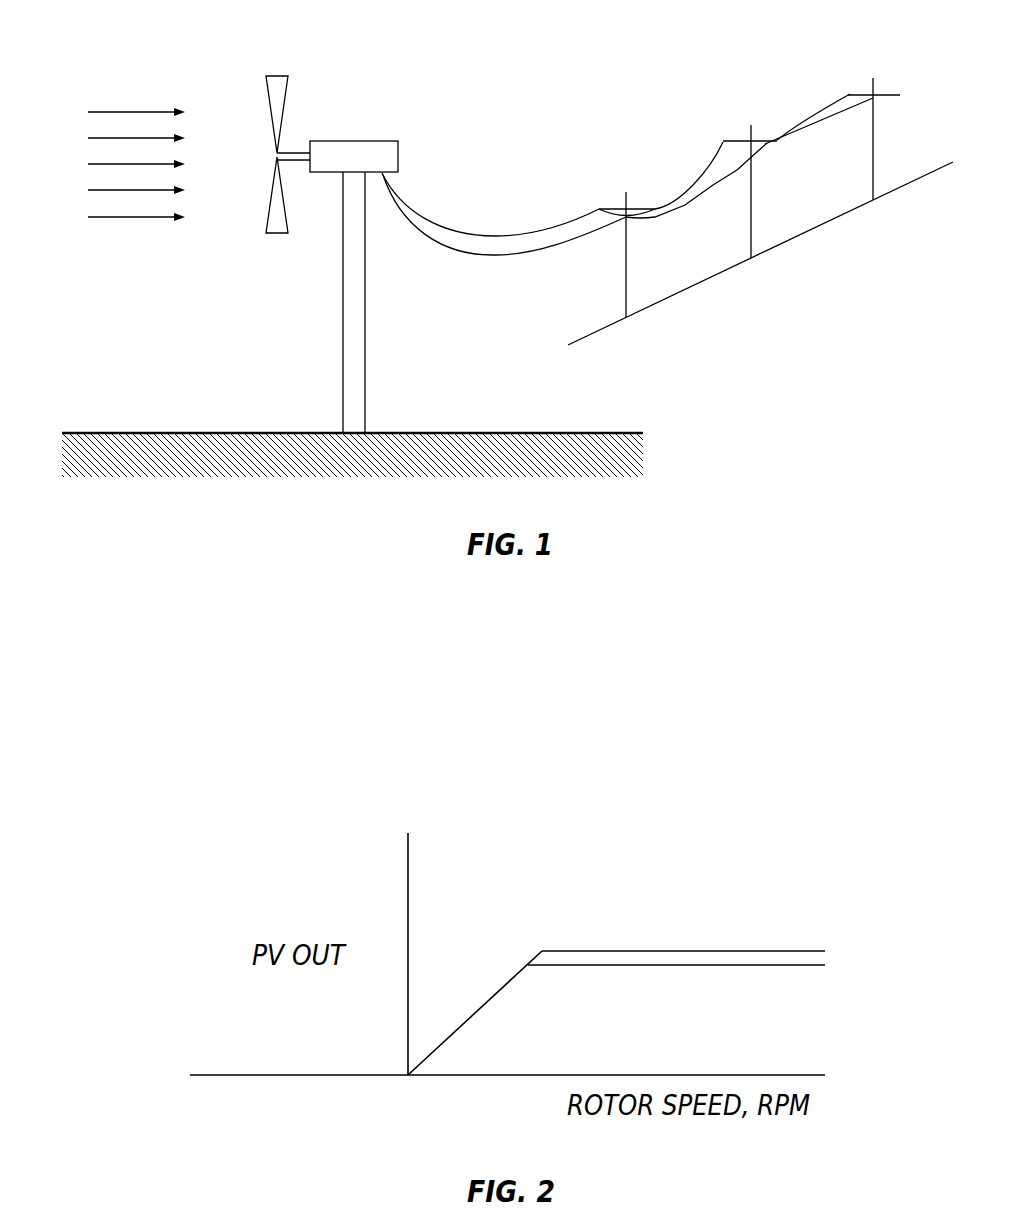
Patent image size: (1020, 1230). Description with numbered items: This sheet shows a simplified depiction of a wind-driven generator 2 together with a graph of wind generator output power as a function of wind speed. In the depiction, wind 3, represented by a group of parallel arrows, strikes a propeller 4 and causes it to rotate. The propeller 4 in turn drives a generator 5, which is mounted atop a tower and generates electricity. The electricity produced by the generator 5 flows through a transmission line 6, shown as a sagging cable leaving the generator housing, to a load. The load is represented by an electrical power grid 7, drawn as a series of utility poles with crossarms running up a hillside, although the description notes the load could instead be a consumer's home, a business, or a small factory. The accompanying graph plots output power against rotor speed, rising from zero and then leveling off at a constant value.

The wind-driven generator 2 is at (675, 52).
The wind 3 is at (85, 107).
The propeller 4 is at (248, 60).
The generator 5 is at (355, 140).
The transmission line 6 is at (476, 234).
The electrical power grid 7 is at (698, 182).